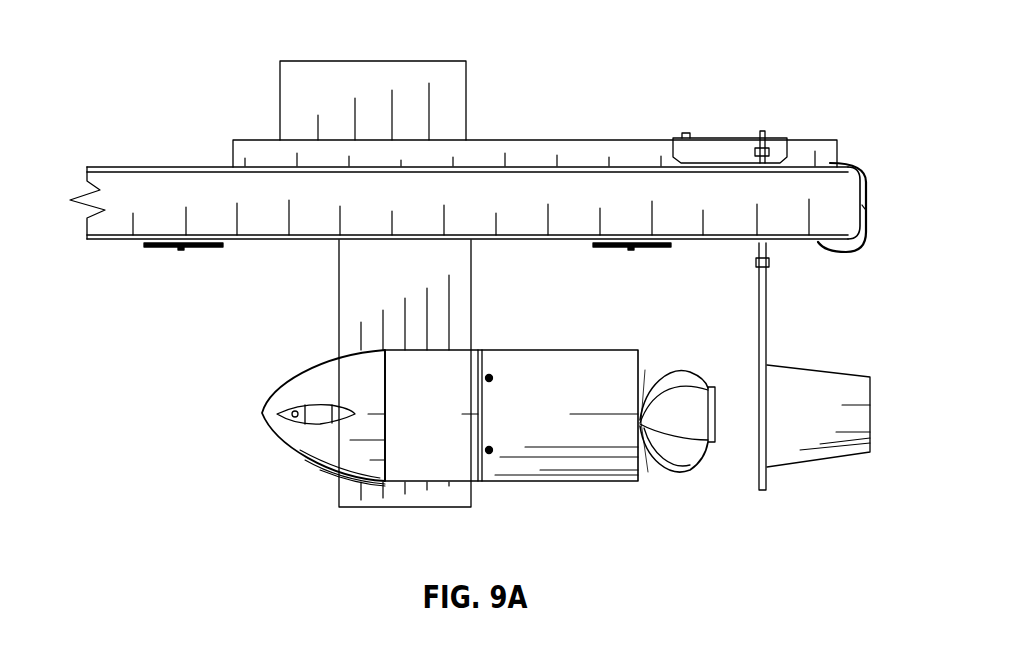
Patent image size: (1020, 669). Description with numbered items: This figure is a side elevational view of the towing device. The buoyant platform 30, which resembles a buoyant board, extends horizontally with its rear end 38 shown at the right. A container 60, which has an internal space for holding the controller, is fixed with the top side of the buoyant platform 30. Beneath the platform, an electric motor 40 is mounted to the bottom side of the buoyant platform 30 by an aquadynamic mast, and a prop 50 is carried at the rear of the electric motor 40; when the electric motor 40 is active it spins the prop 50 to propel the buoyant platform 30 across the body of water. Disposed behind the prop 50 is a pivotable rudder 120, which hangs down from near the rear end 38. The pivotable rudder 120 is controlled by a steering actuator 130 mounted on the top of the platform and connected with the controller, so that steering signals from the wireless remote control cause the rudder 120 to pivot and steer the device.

The buoyant platform 30 is at (100, 190).
The rear end 38 is at (866, 205).
The electric motor 40 is at (585, 483).
The prop 50 is at (685, 452).
The container 60 is at (373, 61).
The pivotable rudder 120 is at (832, 448).
The steering actuator 130 is at (770, 145).